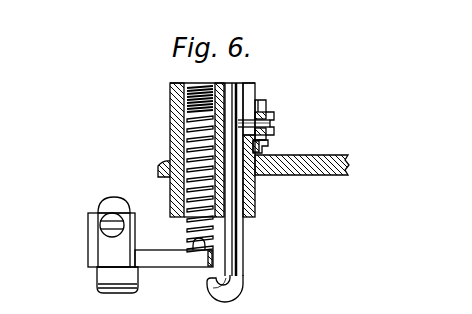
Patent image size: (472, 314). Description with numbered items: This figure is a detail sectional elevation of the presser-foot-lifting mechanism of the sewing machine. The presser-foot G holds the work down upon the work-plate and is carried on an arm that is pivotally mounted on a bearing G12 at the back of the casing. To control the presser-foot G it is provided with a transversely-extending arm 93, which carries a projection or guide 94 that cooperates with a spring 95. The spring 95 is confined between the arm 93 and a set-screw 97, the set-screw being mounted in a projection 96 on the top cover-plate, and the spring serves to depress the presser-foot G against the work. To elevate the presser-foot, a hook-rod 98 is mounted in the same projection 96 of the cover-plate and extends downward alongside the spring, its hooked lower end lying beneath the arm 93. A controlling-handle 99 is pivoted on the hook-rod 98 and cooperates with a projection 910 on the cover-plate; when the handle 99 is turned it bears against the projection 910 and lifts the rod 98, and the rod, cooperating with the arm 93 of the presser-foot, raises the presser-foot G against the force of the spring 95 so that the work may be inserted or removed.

The transversely-extending arm 93 is at (174, 258).
The projection or guide 94 is at (197, 246).
The spring 95 is at (216, 231).
The projection 96 is at (172, 132).
The set-screw 97 is at (205, 83).
The hook-rod 98 is at (237, 285).
The controlling-handle 99 is at (272, 117).
The projection 910 is at (267, 150).
The presser-foot G is at (117, 197).
The bearing G12 is at (323, 156).